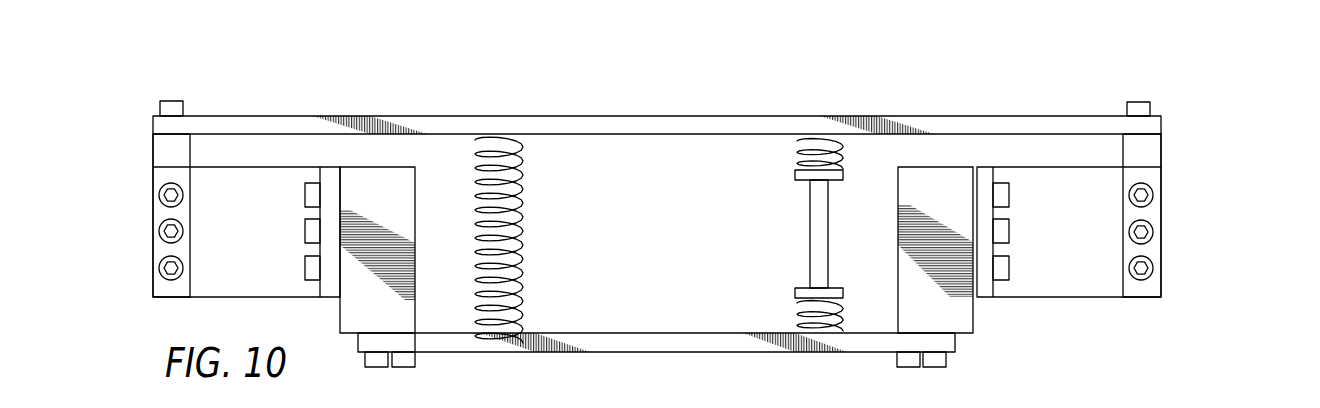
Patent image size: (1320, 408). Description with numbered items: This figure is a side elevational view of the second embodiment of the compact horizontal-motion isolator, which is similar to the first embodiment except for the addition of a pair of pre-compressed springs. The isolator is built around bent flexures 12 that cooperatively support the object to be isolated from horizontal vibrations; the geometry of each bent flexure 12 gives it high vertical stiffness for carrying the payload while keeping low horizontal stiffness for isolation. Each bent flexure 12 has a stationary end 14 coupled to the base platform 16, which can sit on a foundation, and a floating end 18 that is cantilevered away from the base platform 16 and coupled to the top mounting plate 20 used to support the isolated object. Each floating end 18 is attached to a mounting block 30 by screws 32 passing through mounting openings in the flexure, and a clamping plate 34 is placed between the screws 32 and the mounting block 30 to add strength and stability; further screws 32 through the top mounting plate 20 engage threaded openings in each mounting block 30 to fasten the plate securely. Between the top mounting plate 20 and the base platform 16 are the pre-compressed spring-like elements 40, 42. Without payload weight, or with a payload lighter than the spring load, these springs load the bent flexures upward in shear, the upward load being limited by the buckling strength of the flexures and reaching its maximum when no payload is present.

The bent flexure 12 is at (262, 156).
The stationary end 14 is at (973, 298).
The base platform 16 is at (643, 352).
The floating end 18 is at (175, 298).
The top mounting plate 20 is at (720, 115).
The mounting block 30 is at (400, 221).
The screw 32 is at (173, 100).
The clamping plate 34 is at (160, 258).
The pre-compressed spring 40 is at (523, 251).
The pre-compressed spring 42 is at (797, 154).